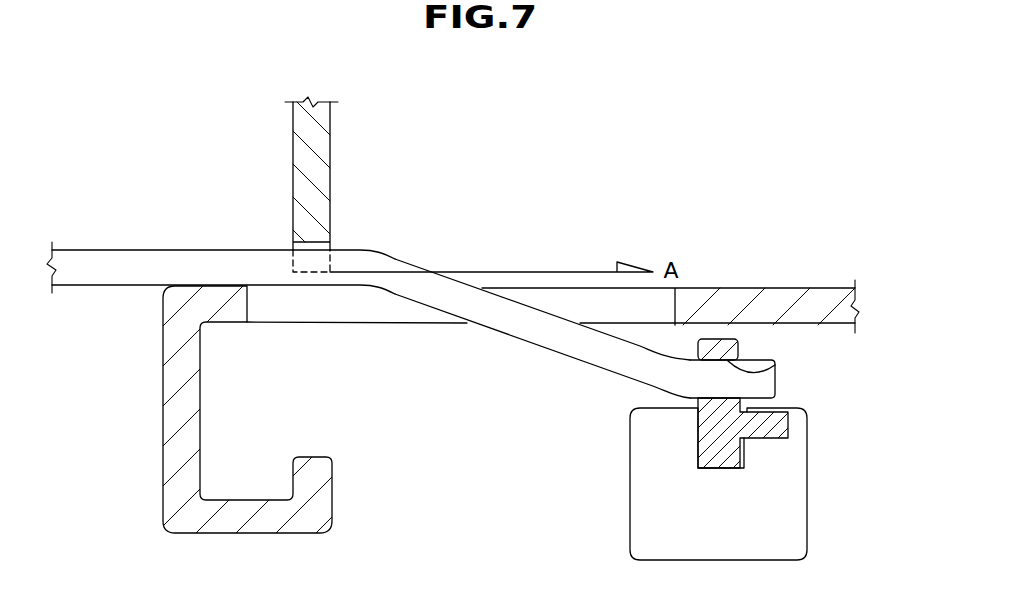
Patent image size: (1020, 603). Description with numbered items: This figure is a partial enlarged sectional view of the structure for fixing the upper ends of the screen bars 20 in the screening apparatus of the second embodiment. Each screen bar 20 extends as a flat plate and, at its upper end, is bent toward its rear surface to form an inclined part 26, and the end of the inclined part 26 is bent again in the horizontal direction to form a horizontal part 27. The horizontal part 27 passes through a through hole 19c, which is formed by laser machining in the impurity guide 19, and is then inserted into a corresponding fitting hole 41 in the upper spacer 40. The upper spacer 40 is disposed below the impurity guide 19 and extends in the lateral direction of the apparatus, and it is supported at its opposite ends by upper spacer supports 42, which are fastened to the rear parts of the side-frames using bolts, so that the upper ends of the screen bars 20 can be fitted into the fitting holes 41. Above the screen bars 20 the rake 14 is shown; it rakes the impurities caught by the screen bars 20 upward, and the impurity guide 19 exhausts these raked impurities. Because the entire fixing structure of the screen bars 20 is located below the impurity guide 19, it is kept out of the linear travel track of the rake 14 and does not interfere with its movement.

The rake 14 is at (330, 123).
The screen bar 20 is at (100, 262).
The inclined part 26 is at (528, 333).
The horizontal part 27 is at (767, 388).
The impurity guide 19 is at (803, 298).
The through hole 19c is at (343, 313).
The fitting hole 41 is at (772, 366).
The upper spacer 40 is at (735, 455).
The upper spacer support 42 is at (793, 498).